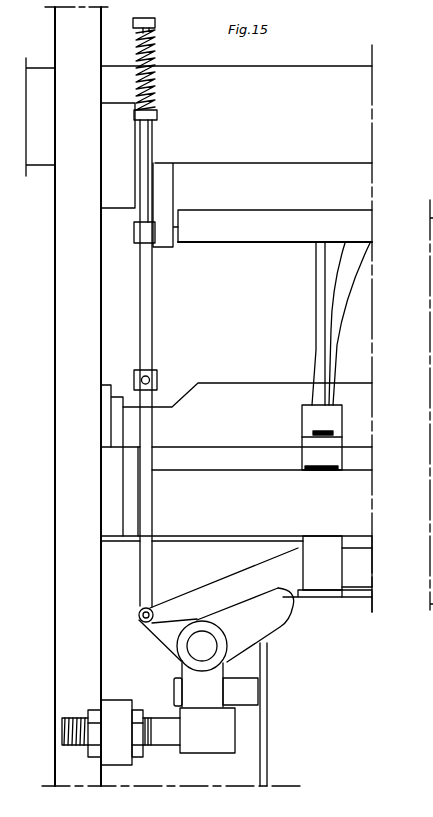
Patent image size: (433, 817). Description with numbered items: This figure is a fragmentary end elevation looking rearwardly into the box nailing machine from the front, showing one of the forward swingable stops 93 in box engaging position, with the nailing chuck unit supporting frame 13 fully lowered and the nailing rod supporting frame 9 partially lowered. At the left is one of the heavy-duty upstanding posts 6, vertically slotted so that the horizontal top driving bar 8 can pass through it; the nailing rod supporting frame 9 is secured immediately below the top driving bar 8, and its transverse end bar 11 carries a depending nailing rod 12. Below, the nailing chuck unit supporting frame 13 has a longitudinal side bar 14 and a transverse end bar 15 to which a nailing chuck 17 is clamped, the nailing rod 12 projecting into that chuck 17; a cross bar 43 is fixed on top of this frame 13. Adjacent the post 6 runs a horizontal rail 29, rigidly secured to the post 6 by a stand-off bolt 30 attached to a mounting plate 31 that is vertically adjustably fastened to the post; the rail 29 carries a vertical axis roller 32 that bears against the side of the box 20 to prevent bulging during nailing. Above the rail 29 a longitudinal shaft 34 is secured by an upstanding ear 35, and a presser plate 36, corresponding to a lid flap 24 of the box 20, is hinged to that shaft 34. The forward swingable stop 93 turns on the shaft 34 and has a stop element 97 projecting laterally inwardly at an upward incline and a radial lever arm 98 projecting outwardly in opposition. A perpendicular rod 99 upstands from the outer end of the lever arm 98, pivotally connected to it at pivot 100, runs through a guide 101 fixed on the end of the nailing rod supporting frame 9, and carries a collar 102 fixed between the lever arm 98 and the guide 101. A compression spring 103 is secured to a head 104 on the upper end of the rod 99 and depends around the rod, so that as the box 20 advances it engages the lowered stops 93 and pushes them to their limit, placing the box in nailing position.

The post 6 is at (66, 362).
The top driving bar 8 is at (298, 82).
The nailing rod supporting frame 9 is at (260, 248).
The end bar 11 is at (250, 170).
The nailing rod 12 is at (317, 290).
The nailing chuck unit supporting frame 13 is at (233, 470).
The side bar 14 is at (127, 483).
The end bar 15 is at (206, 530).
The nailing chuck 17 is at (310, 568).
The produce packed box 20 is at (259, 763).
The lid flap 24 is at (320, 597).
The rail 29 is at (192, 742).
The stand-off bolt 30 is at (160, 727).
The mounting plate 31 is at (114, 707).
The vertical axis roller 32 is at (250, 689).
The longitudinal shaft 34 is at (195, 648).
The upstanding ear 35 is at (203, 690).
The presser plate 36 is at (358, 591).
The cross bar 43 is at (250, 393).
The forward swingable stop 93 is at (249, 593).
The stop element 97 is at (253, 630).
The radial lever arm 98 is at (168, 607).
The perpendicular rod 99 is at (148, 302).
The pivotal connection 100 is at (138, 622).
The guide 101 is at (135, 232).
The collar 102 is at (160, 372).
The compression spring 103 is at (160, 83).
The head 104 is at (157, 23).